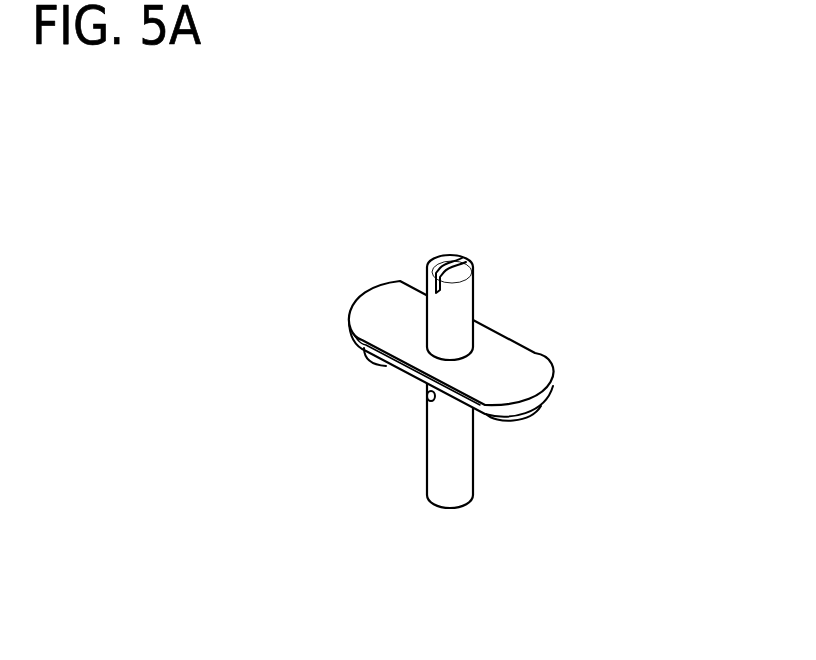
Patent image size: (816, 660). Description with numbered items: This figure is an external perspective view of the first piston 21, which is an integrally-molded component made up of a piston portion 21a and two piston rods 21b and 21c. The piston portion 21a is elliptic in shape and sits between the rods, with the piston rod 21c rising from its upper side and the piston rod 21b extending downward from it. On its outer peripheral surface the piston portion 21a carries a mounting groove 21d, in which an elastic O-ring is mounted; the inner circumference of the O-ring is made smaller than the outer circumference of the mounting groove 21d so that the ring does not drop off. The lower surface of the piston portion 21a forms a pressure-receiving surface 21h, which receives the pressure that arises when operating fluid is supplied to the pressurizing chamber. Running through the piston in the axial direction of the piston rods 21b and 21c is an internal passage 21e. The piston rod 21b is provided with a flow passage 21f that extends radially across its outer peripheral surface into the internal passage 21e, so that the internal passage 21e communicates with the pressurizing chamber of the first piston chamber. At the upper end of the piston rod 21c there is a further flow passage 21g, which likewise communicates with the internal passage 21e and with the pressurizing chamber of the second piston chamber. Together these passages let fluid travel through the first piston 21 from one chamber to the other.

The first piston 21 is at (457, 340).
The piston portion 21a is at (530, 375).
The piston rod 21b is at (463, 489).
The piston rod 21c is at (472, 303).
The mounting groove 21d is at (517, 417).
The internal passage 21e is at (461, 258).
The flow passage 21f is at (427, 397).
The flow passage 21g is at (424, 296).
The pressure-receiving surface 21h is at (394, 371).